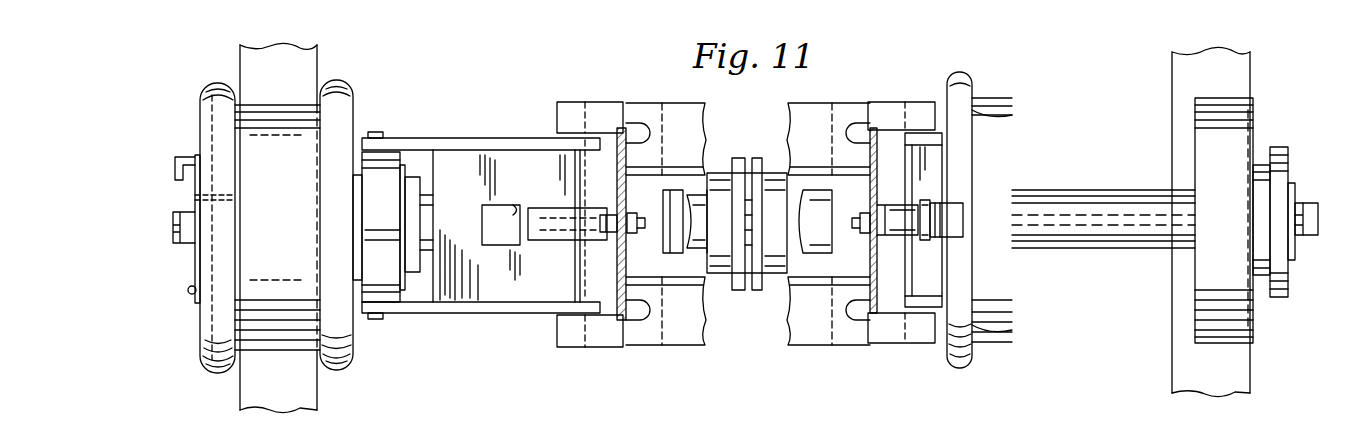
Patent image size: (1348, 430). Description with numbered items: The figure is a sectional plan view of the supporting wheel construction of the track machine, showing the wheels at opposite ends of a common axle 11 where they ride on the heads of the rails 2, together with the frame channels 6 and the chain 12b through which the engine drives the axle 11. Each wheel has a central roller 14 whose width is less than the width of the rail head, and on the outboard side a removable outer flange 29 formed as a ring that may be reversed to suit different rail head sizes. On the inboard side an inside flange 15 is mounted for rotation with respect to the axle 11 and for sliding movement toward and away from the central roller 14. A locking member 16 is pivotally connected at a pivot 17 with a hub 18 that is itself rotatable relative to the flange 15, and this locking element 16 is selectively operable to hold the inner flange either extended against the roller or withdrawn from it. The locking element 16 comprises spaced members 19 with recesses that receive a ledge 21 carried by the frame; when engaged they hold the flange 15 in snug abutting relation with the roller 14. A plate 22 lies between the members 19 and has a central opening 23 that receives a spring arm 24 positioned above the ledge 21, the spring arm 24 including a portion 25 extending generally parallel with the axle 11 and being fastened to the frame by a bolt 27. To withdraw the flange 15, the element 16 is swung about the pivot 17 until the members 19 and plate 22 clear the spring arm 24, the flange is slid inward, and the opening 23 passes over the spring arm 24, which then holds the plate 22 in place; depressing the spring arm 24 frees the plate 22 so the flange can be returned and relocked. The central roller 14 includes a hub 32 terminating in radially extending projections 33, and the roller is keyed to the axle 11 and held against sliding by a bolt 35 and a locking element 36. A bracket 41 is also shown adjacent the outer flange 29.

The rail 2 is at (310, 58).
The frame channel 6 is at (748, 113).
The axle 11 is at (690, 255).
The chain 12b is at (742, 170).
The central roller 14 is at (272, 350).
The inside flange 15 is at (340, 370).
The locking member 16 is at (438, 313).
The pivot 17 is at (375, 132).
The hub 18 is at (388, 147).
The spaced members 19 is at (472, 138).
The ledge 21 is at (616, 300).
The plate 22 is at (532, 302).
The central opening 23 is at (520, 208).
The spring arm 24 is at (550, 240).
The portion 25 is at (600, 238).
The bolt 27 is at (634, 213).
The removable outer flange 29 is at (217, 83).
The hub 32 is at (1260, 165).
The projections 33 is at (1288, 150).
The bolt 35 is at (181, 212).
The locking element 36 is at (1292, 260).
The bracket 41 is at (182, 157).